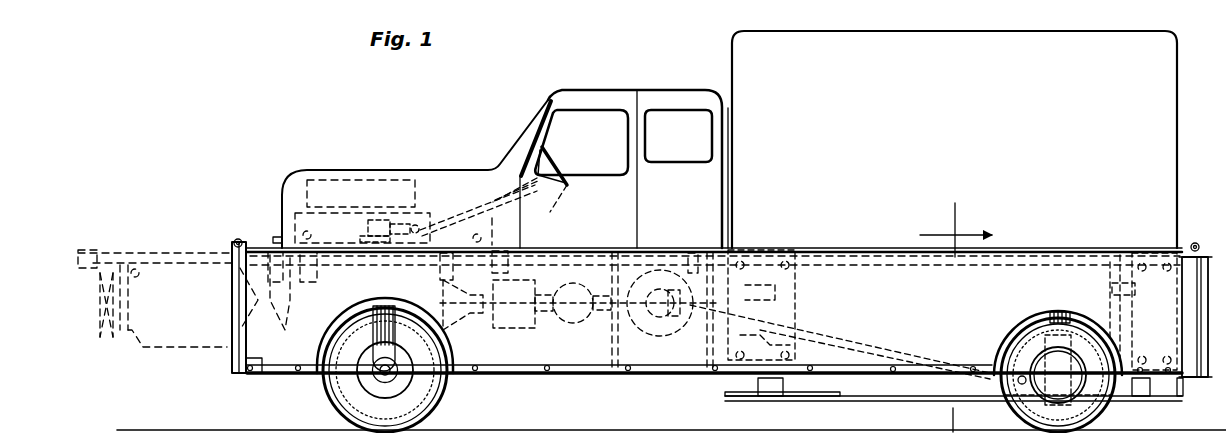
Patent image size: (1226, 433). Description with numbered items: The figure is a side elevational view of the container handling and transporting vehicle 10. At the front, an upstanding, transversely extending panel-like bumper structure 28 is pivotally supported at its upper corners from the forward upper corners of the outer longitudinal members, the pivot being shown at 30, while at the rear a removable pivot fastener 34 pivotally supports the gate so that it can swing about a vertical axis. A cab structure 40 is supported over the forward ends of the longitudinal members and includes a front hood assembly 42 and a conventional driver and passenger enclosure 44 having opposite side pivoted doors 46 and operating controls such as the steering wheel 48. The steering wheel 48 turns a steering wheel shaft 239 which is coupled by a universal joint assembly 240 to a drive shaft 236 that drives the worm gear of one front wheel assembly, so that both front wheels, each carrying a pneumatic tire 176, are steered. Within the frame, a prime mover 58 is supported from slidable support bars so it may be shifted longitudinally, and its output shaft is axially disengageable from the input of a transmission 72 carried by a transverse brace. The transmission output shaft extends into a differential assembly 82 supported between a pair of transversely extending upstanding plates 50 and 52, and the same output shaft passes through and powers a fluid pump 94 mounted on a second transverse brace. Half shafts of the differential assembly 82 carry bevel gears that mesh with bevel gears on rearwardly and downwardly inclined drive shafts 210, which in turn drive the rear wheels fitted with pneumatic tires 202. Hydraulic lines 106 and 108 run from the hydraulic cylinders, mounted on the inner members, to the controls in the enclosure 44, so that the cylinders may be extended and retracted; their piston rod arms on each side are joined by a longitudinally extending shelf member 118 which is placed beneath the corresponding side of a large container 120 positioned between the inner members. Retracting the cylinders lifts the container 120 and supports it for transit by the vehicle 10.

The container handling and transporting vehicle 10 is at (523, 108).
The bumper structure 28 is at (232, 312).
The pivot 30 is at (237, 239).
The removable pivot fastener 34 is at (1195, 243).
The cab structure 40 is at (481, 165).
The front hood assembly 42 is at (355, 165).
The driver and passenger enclosure 44 is at (625, 86).
The pivoted doors 46 is at (612, 217).
The steering wheel 48 is at (545, 150).
The transversely extending upstanding plate 50 is at (714, 326).
The transversely extending upstanding plate 52 is at (612, 352).
The prime mover 58 is at (247, 370).
The transmission 72 is at (483, 378).
The differential assembly 82 is at (647, 339).
The fluid pump 94 is at (567, 327).
The hydraulic line 106 is at (790, 300).
The hydraulic line 108 is at (787, 345).
The shelf member 118 is at (922, 407).
The container 120 is at (1165, 181).
The pneumatic tire 176 is at (337, 380).
The pneumatic tire 202 is at (1087, 408).
The drive shaft 210 is at (880, 338).
The drive shaft 236 is at (433, 220).
The steering wheel shaft 239 is at (532, 206).
The universal joint assembly 240 is at (480, 204).